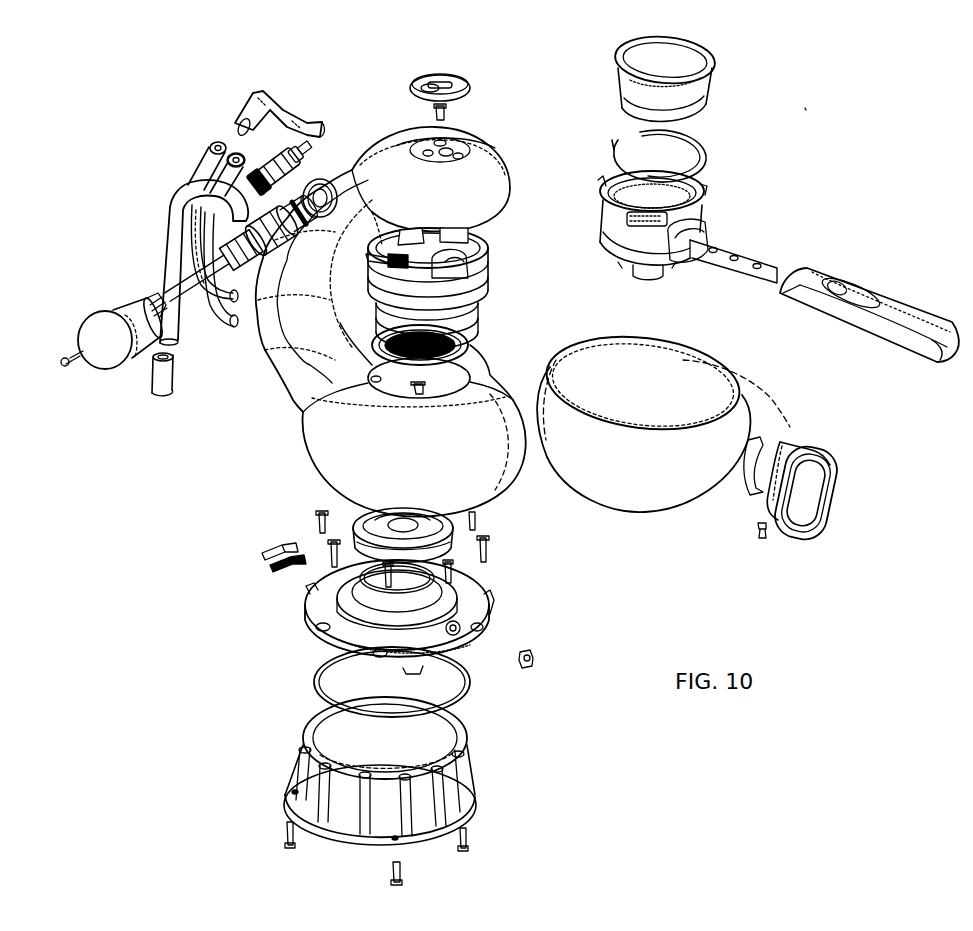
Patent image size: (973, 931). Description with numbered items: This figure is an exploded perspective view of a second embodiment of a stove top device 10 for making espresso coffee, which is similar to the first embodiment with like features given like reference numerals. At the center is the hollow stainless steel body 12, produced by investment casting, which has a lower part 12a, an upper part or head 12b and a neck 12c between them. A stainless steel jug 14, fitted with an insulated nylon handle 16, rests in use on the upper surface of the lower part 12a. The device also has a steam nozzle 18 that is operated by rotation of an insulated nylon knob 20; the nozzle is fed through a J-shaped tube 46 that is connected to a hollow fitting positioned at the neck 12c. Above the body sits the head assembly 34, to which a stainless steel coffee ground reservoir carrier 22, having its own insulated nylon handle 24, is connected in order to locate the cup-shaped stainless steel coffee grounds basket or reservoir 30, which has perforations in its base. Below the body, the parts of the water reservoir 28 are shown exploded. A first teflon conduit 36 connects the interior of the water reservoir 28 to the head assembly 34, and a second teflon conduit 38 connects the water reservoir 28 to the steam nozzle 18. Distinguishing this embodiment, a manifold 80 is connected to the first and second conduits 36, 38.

The stove top device 10 is at (808, 106).
The hollow stainless steel body 12 is at (287, 395).
The lower part 12a is at (318, 458).
The upper part or head 12b is at (492, 162).
The neck 12c is at (306, 308).
The jug 14 is at (600, 483).
The handle 16 is at (823, 463).
The steam nozzle 18 is at (157, 377).
The knob 20 is at (100, 322).
The coffee ground reservoir carrier 22 is at (709, 206).
The handle 24 is at (899, 310).
The water reservoir 28 is at (518, 828).
The coffee grounds basket or reservoir 30 is at (698, 90).
The head assembly 34 is at (500, 273).
The first teflon conduit 36 is at (203, 158).
The second teflon conduit 38 is at (237, 152).
The J-shaped tube 46 is at (176, 202).
The manifold 80 is at (307, 160).